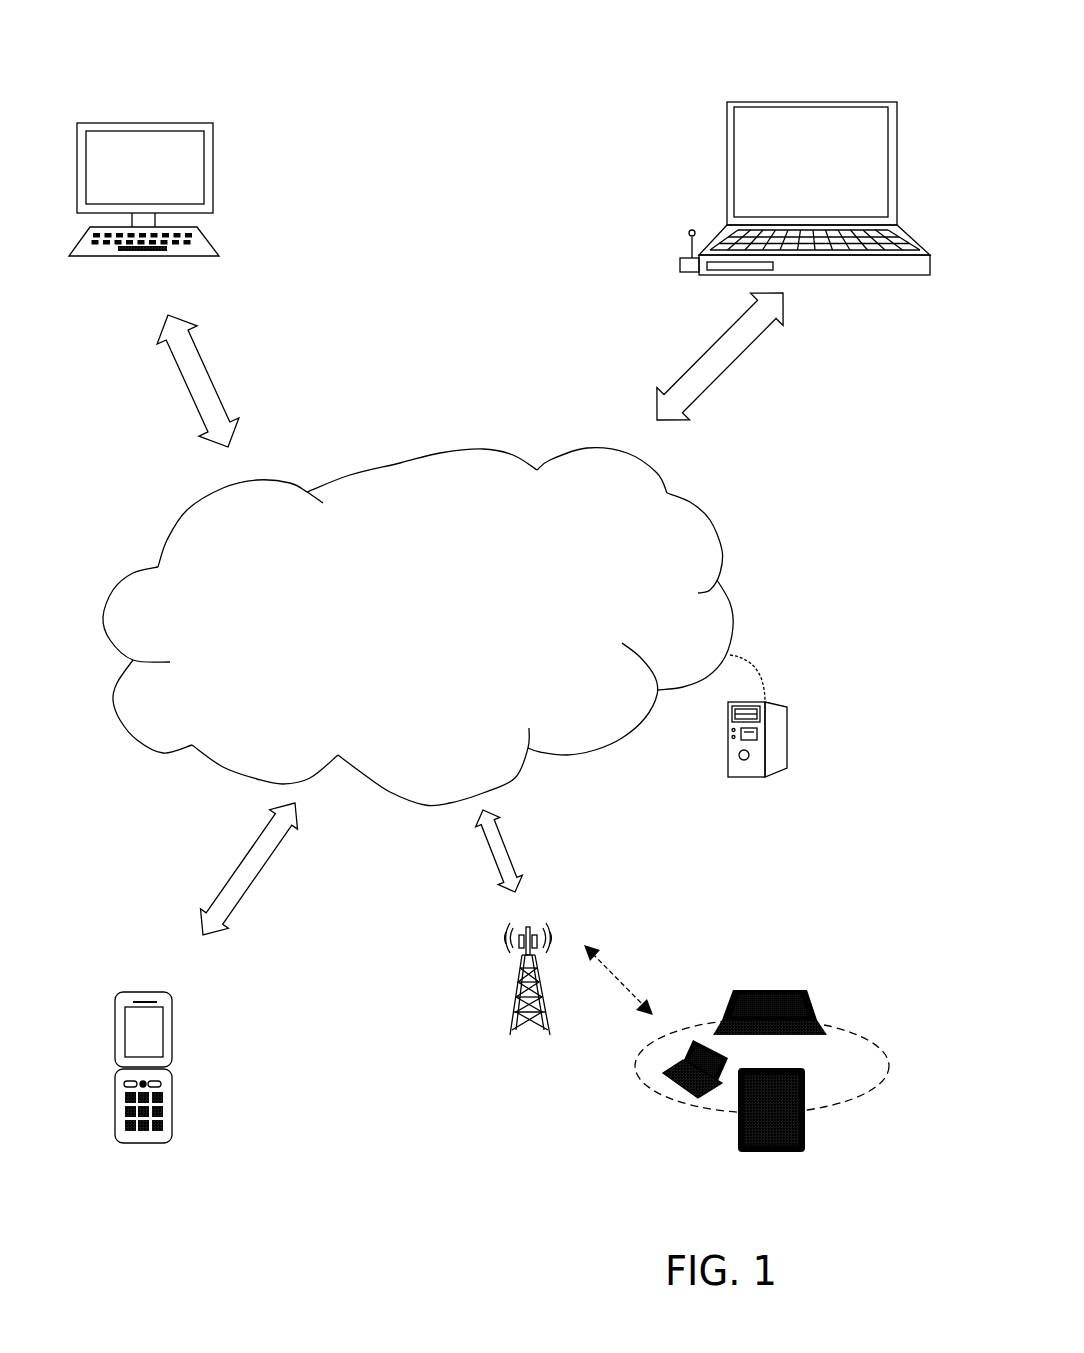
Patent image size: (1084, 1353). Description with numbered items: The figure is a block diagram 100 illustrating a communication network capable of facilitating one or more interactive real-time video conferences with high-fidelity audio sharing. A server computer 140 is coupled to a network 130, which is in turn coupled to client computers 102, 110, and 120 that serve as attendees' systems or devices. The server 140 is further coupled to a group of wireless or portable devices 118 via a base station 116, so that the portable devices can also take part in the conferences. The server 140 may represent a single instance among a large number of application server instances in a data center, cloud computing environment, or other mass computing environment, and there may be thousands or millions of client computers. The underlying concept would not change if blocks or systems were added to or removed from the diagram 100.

The block diagram 100 is at (410, 88).
The client computer 102 is at (219, 151).
The client computer 110 is at (824, 171).
The base station 116 is at (512, 1018).
The group of wireless or portable devices 118 is at (635, 1071).
The client computer 120 is at (167, 1052).
The network 130 is at (439, 639).
The server computer 140 is at (778, 768).